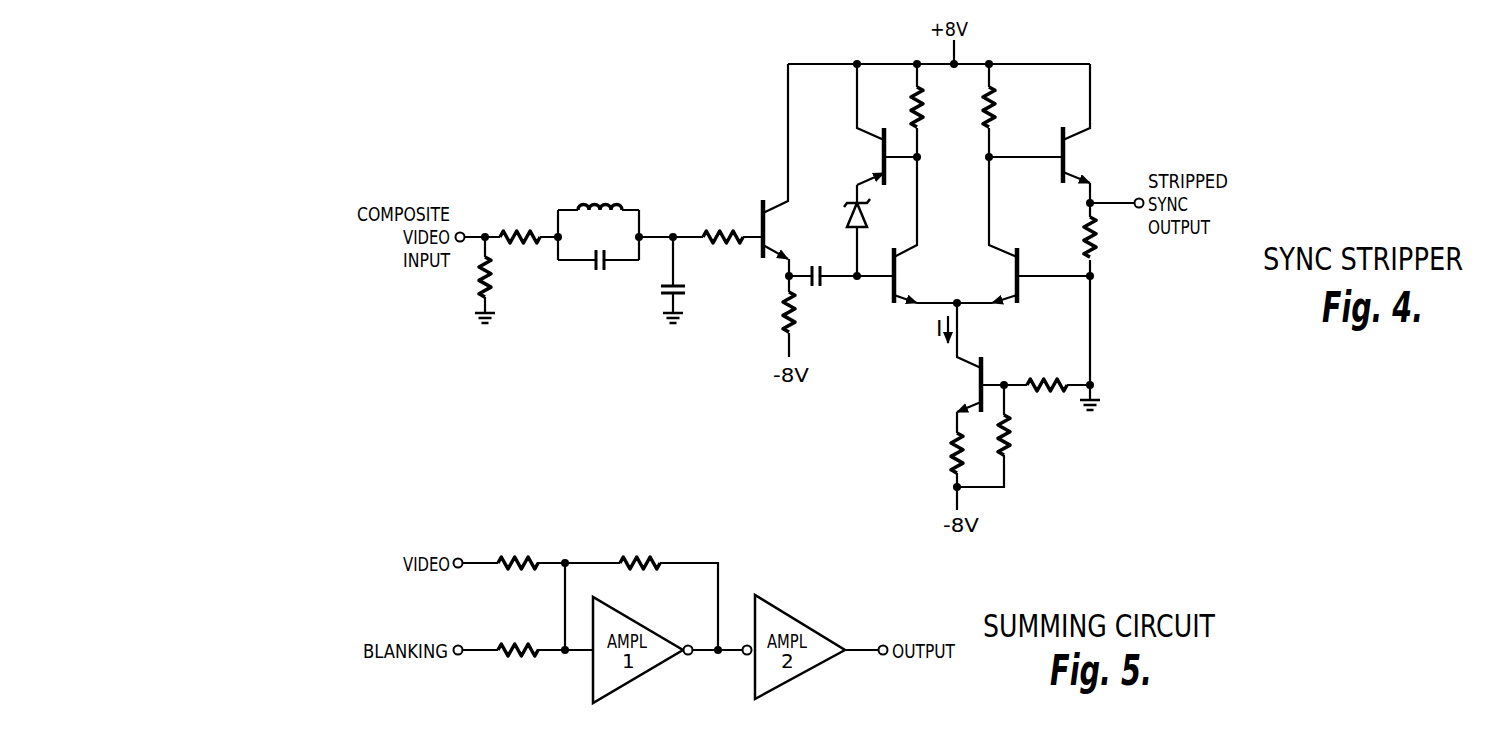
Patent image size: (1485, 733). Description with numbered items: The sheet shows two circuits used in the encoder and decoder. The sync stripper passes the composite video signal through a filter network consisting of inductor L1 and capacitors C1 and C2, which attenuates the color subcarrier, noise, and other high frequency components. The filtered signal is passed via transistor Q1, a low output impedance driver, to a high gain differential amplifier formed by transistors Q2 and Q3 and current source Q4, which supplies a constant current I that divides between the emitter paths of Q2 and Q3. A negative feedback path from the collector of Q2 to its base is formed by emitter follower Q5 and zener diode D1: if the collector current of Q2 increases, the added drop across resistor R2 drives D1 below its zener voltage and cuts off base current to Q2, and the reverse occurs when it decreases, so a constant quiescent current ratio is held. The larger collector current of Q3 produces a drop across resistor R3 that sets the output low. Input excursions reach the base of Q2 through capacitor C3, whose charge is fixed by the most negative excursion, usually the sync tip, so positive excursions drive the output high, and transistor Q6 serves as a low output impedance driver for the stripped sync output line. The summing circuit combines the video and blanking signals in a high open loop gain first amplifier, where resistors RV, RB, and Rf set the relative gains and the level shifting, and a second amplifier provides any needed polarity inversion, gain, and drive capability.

In FIG. 4, the inductor L1 is at (602, 206).
In FIG. 4, the capacitor C1 is at (596, 270).
In FIG. 4, the capacitor C2 is at (679, 287).
In FIG. 4, the capacitor C3 is at (822, 284).
In FIG. 4, the zener diode D1 is at (868, 214).
In FIG. 4, the resistor R2 is at (932, 105).
In FIG. 4, the resistor R3 is at (1004, 105).
In FIG. 4, the low output impedance driver Q1 is at (780, 229).
In FIG. 4, the transistor Q2 is at (910, 275).
In FIG. 4, the transistor Q3 is at (1000, 275).
In FIG. 4, the current source Q4 is at (965, 384).
In FIG. 4, the emitter follower Q5 is at (867, 156).
In FIG. 4, the transistor Q6 is at (1081, 155).
In FIG. 5, the resistor RV is at (503, 556).
In FIG. 5, the resistor Rf is at (629, 556).
In FIG. 5, the resistor RB is at (503, 644).